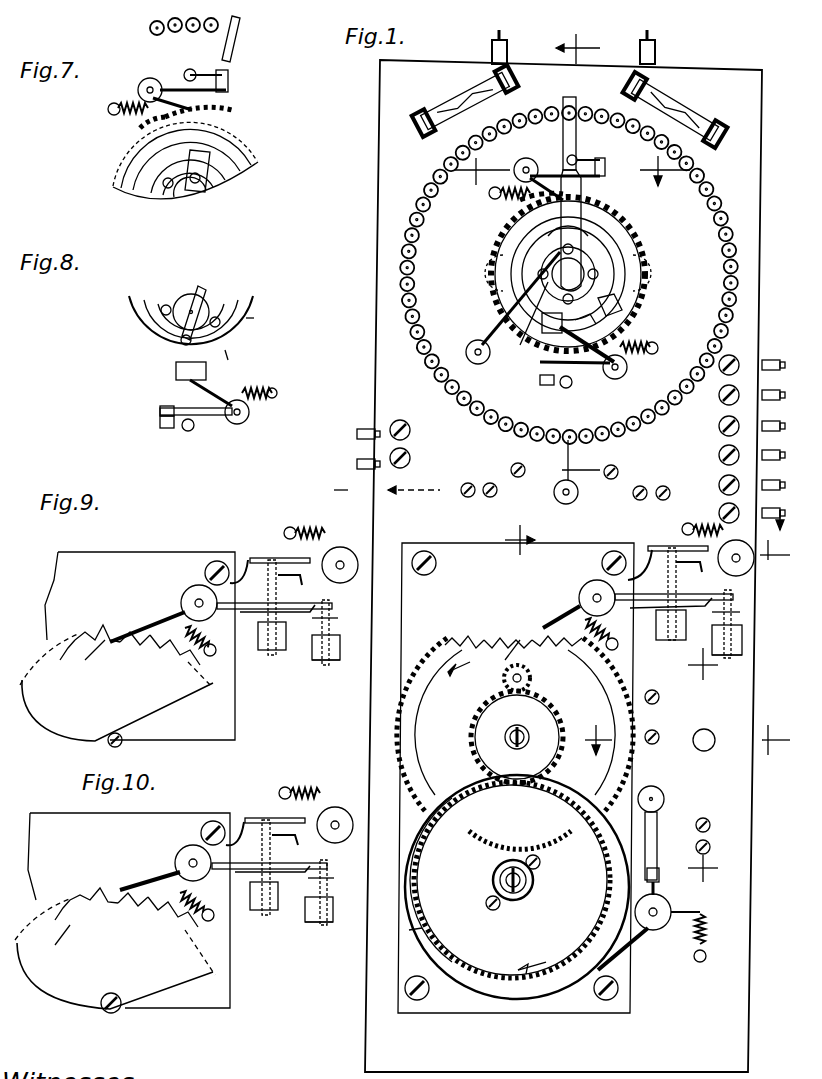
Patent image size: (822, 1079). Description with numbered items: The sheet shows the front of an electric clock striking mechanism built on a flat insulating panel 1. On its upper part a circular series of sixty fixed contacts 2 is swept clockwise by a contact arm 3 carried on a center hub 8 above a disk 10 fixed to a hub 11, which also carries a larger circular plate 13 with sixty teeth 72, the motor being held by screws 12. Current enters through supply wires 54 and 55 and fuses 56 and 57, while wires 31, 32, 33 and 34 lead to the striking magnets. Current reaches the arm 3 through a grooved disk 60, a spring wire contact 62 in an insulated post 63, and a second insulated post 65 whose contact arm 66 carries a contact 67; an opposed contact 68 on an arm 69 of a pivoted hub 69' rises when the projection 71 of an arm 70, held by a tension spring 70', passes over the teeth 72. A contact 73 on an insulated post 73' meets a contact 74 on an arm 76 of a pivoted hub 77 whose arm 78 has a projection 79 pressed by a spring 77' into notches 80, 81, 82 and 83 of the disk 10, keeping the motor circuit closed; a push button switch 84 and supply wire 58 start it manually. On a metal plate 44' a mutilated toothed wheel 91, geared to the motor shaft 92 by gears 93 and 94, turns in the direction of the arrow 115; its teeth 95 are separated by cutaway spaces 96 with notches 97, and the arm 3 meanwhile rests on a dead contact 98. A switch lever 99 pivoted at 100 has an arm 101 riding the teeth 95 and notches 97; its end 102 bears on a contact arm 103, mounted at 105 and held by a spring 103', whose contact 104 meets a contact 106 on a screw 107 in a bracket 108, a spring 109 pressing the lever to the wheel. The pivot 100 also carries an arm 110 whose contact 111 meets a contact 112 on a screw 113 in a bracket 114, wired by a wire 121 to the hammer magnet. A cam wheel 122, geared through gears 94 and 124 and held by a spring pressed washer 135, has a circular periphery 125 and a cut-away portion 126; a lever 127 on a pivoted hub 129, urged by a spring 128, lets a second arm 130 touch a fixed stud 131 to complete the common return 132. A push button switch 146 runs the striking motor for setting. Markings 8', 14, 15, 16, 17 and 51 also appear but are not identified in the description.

In FIG. 1, the panel 1 is at (378, 172).
In FIG. 7, the fixed contacts 2 is at (157, 22).
In FIG. 1, the fixed contacts 2 is at (418, 205).
In FIG. 7, the contact arm 3 is at (198, 185).
In FIG. 8, the contact arm 3 is at (198, 292).
In FIG. 1, the contact arm 3 is at (563, 138).
In FIG. 7, the center hub 8 is at (181, 196).
In FIG. 8, the center hub 8 is at (190, 299).
In FIG. 1, the hub disk 8' is at (614, 263).
In FIG. 7, the disk 10 is at (238, 178).
In FIG. 8, the disk 10 is at (240, 290).
In FIG. 1, the disk 10 is at (612, 250).
In FIG. 9, the hub 11 is at (358, 542).
In FIG. 1, the hub 11 is at (755, 457).
In FIG. 1, the screws 12 is at (486, 273).
In FIG. 7, the circular plate 13 is at (262, 162).
In FIG. 1, the circular plate 13 is at (500, 245).
In FIG. 1, the section line 14 is at (685, 740).
In FIG. 1, the section line 15 is at (681, 770).
In FIG. 1, the section line 16 is at (578, 253).
In FIG. 1, the section line 17 is at (572, 172).
In FIG. 1, the wire 31 is at (782, 392).
In FIG. 1, the wire 32 is at (782, 423).
In FIG. 1, the wire 33 is at (782, 452).
In FIG. 1, the wire 34 is at (782, 482).
In FIG. 9, the metal plate 44' is at (140, 630).
In FIG. 10, the metal plate 44' is at (129, 890).
In FIG. 1, the metal plate 44' is at (516, 764).
In FIG. 1, the terminal 51 is at (355, 434).
In FIG. 1, the supply wire 54 is at (492, 36).
In FIG. 1, the supply wire 55 is at (655, 40).
In FIG. 1, the fuse 56 is at (465, 100).
In FIG. 1, the fuse 57 is at (688, 112).
In FIG. 1, the supply wire 58 is at (355, 464).
In FIG. 1, the disk 60 is at (536, 336).
In FIG. 1, the spring wire contact 62 is at (505, 328).
In FIG. 1, the insulated post 63 is at (478, 364).
In FIG. 7, the insulated post 65 is at (195, 62).
In FIG. 1, the insulated post 65 is at (578, 158).
In FIG. 7, the contact arm 66 is at (224, 73).
In FIG. 1, the contact arm 66 is at (602, 160).
In FIG. 7, the contact 67 is at (228, 80).
In FIG. 1, the contact 67 is at (606, 165).
In FIG. 7, the co-operating contact 68 is at (228, 90).
In FIG. 1, the co-operating contact 68 is at (606, 176).
In FIG. 7, the arm 69 is at (159, 72).
In FIG. 1, the arm 69 is at (520, 163).
In FIG. 7, the hub 69' is at (161, 76).
In FIG. 1, the hub 69' is at (520, 177).
In FIG. 7, the arm 70 is at (217, 114).
In FIG. 1, the arm 70 is at (529, 205).
In FIG. 7, the tension spring 70' is at (107, 114).
In FIG. 1, the tension spring 70' is at (491, 204).
In FIG. 7, the end projection 71 is at (179, 170).
In FIG. 1, the end projection 71 is at (551, 220).
In FIG. 7, the teeth 72 is at (140, 128).
In FIG. 8, the contact 73 is at (146, 425).
In FIG. 1, the contact 73 is at (528, 389).
In FIG. 8, the insulated post 73' is at (182, 442).
In FIG. 1, the insulated post 73' is at (546, 399).
In FIG. 8, the contact 74 is at (158, 410).
In FIG. 1, the contact 74 is at (540, 364).
In FIG. 8, the arm 76 is at (212, 416).
In FIG. 1, the arm 76 is at (596, 358).
In FIG. 8, the hub 77 is at (245, 423).
In FIG. 1, the hub 77 is at (615, 381).
In FIG. 8, the tension spring 77' is at (272, 377).
In FIG. 1, the tension spring 77' is at (644, 336).
In FIG. 8, the arm 78 is at (215, 395).
In FIG. 1, the arm 78 is at (596, 345).
In FIG. 8, the transverse projection 79 is at (190, 382).
In FIG. 1, the transverse projection 79 is at (579, 318).
In FIG. 8, the notch 80 is at (174, 366).
In FIG. 1, the notch 80 is at (549, 322).
In FIG. 8, the notch 81 is at (213, 352).
In FIG. 1, the notch 81 is at (610, 304).
In FIG. 8, the notch 82 is at (256, 318).
In FIG. 1, the notch 82 is at (546, 334).
In FIG. 7, the notch 83 is at (182, 180).
In FIG. 1, the notch 83 is at (545, 226).
In FIG. 1, the push button switch 84 is at (574, 500).
In FIG. 9, the mutilated toothed wheel 91 is at (50, 728).
In FIG. 10, the mutilated toothed wheel 91 is at (55, 985).
In FIG. 1, the mutilated toothed wheel 91 is at (450, 660).
In FIG. 1, the motor shaft 92 is at (557, 651).
In FIG. 1, the gear 93 is at (532, 678).
In FIG. 1, the gear 94 is at (562, 722).
In FIG. 9, the teeth 95 is at (100, 636).
In FIG. 10, the teeth 95 is at (80, 893).
In FIG. 1, the teeth 95 is at (458, 630).
In FIG. 9, the cutaway space 96 is at (64, 658).
In FIG. 10, the cutaway space 96 is at (74, 921).
In FIG. 1, the cutaway space 96 is at (450, 745).
In FIG. 9, the notch 97 is at (170, 655).
In FIG. 10, the notch 97 is at (165, 915).
In FIG. 1, the notch 97 is at (500, 630).
In FIG. 7, the dead contact 98 is at (242, 31).
In FIG. 1, the dead contact 98 is at (574, 106).
In FIG. 9, the switch lever 99 is at (155, 624).
In FIG. 10, the switch lever 99 is at (152, 880).
In FIG. 1, the switch lever 99 is at (563, 614).
In FIG. 9, the pivot 100 is at (194, 592).
In FIG. 10, the pivot 100 is at (188, 848).
In FIG. 1, the pivot 100 is at (594, 580).
In FIG. 9, the transverse arm 101 is at (132, 645).
In FIG. 10, the transverse arm 101 is at (117, 895).
In FIG. 1, the transverse arm 101 is at (511, 654).
In FIG. 9, the free end 102 is at (219, 566).
In FIG. 10, the free end 102 is at (240, 830).
In FIG. 1, the free end 102 is at (645, 560).
In FIG. 9, the contact arm 103 is at (274, 547).
In FIG. 10, the contact arm 103 is at (271, 805).
In FIG. 1, the contact arm 103 is at (675, 535).
In FIG. 9, the tension spring 103' is at (306, 522).
In FIG. 10, the tension spring 103' is at (305, 777).
In FIG. 1, the tension spring 103' is at (700, 517).
In FIG. 9, the contact 104 is at (272, 558).
In FIG. 10, the contact 104 is at (266, 818).
In FIG. 1, the contact 104 is at (675, 586).
In FIG. 9, the mounting 105 is at (350, 552).
In FIG. 10, the mounting 105 is at (340, 808).
In FIG. 1, the mounting 105 is at (752, 568).
In FIG. 9, the co-operating contact 106 is at (298, 585).
In FIG. 10, the co-operating contact 106 is at (292, 842).
In FIG. 1, the co-operating contact 106 is at (680, 566).
In FIG. 9, the screw 107 is at (282, 612).
In FIG. 10, the screw 107 is at (275, 873).
In FIG. 1, the screw 107 is at (674, 604).
In FIG. 9, the bracket 108 is at (262, 650).
In FIG. 10, the bracket 108 is at (258, 910).
In FIG. 1, the bracket 108 is at (680, 618).
In FIG. 9, the spring 109 is at (208, 640).
In FIG. 10, the spring 109 is at (195, 905).
In FIG. 1, the spring 109 is at (609, 632).
In FIG. 9, the arm 110 is at (274, 596).
In FIG. 10, the arm 110 is at (269, 857).
In FIG. 1, the arm 110 is at (652, 600).
In FIG. 9, the contact 111 is at (330, 600).
In FIG. 10, the contact 111 is at (338, 884).
In FIG. 1, the contact 111 is at (734, 594).
In FIG. 9, the contact 112 is at (332, 615).
In FIG. 10, the contact 112 is at (336, 871).
In FIG. 1, the contact 112 is at (735, 606).
In FIG. 9, the screw 113 is at (334, 636).
In FIG. 10, the screw 113 is at (327, 897).
In FIG. 1, the screw 113 is at (742, 626).
In FIG. 9, the bracket 114 is at (343, 660).
In FIG. 10, the bracket 114 is at (333, 922).
In FIG. 1, the bracket 114 is at (744, 650).
In FIG. 9, the arrow 115 is at (88, 665).
In FIG. 10, the arrow 115 is at (57, 948).
In FIG. 1, the arrow 115 is at (466, 672).
In FIG. 1, the wire 121 is at (779, 502).
In FIG. 1, the cam wheel 122 is at (480, 998).
In FIG. 1, the gear 124 is at (500, 972).
In FIG. 1, the circular periphery 125 is at (548, 999).
In FIG. 1, the cut-away portion 126 is at (416, 893).
In FIG. 1, the lever 127 is at (625, 945).
In FIG. 1, the spring 128 is at (704, 940).
In FIG. 1, the hub 129 is at (638, 910).
In FIG. 1, the arm 130 is at (658, 830).
In FIG. 1, the stud 131 is at (658, 792).
In FIG. 1, the common return 132 is at (778, 360).
In FIG. 1, the spring pressed washer 135 is at (530, 888).
In FIG. 1, the push button switch 146 is at (708, 730).